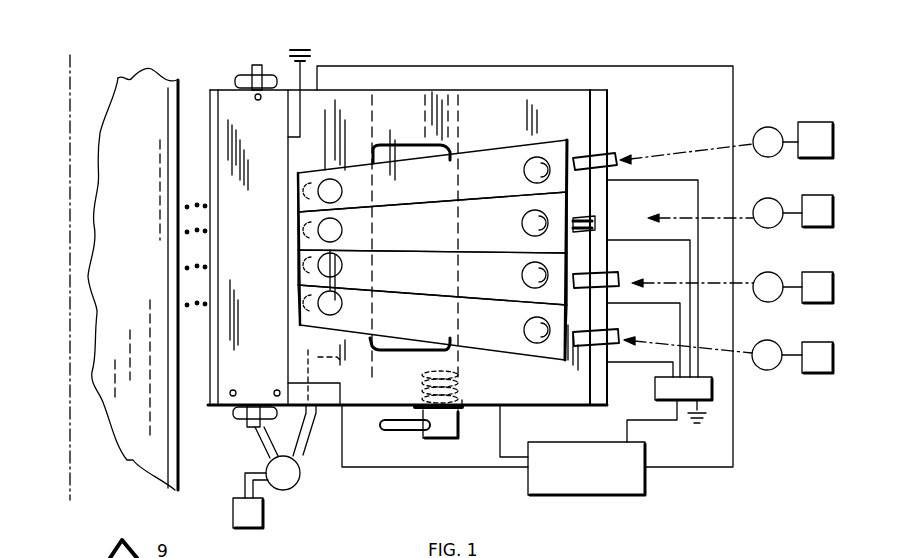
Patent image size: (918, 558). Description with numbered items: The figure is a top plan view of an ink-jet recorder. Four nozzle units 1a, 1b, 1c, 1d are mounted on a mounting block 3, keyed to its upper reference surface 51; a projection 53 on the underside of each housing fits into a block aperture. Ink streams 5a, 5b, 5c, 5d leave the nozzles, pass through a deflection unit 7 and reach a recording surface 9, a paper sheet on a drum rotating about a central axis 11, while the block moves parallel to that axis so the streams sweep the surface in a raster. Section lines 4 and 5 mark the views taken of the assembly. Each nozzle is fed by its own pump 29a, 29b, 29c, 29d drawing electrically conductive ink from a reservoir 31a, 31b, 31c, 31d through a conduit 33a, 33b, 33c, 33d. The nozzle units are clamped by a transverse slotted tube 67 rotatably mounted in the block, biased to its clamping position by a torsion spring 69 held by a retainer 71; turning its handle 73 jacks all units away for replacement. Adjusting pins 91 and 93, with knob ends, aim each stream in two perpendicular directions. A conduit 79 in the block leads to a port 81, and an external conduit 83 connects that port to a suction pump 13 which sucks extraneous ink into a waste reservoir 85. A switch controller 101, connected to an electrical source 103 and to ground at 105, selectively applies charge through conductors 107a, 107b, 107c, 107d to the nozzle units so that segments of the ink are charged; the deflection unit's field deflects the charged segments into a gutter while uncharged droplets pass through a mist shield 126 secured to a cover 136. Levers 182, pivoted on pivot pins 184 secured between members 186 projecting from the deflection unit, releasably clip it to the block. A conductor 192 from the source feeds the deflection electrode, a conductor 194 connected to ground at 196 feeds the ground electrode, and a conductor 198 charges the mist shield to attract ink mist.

The nozzle unit 1a is at (502, 163).
The nozzle unit 1b is at (479, 183).
The nozzle unit 1c is at (477, 337).
The nozzle unit 1d is at (462, 333).
The mounting block 3 is at (382, 89).
The section line 4 is at (250, 24).
The section line 5 is at (155, 218).
The ink stream 5a is at (198, 204).
The ink stream 5b is at (198, 229).
The ink stream 5c is at (198, 265).
The ink stream 5d is at (198, 302).
The deflection unit 7 is at (221, 82).
The recording surface 9 is at (180, 480).
The central axis 11 is at (72, 482).
The suction pump 13 is at (290, 490).
The pump 29a is at (775, 126).
The pump 29b is at (780, 184).
The pump 29c is at (760, 272).
The pump 29d is at (757, 342).
The reservoir 31a is at (818, 120).
The reservoir 31b is at (823, 200).
The reservoir 31c is at (815, 278).
The reservoir 31d is at (815, 346).
The conduit 33a is at (605, 156).
The conduit 33b is at (592, 220).
The conduit 33c is at (612, 275).
The conduit 33d is at (612, 334).
The upper surface 51 is at (563, 100).
The projection 53 is at (524, 330).
The transverse tube 67 is at (445, 438).
The torsion spring 69 is at (466, 395).
The retainer 71 is at (457, 410).
The handle 73 is at (400, 430).
The conduit 79 is at (326, 376).
The port 81 is at (318, 413).
The external conduit 83 is at (302, 460).
The waste reservoir 85 is at (233, 515).
The pin 91 is at (342, 195).
The pin 93 is at (528, 180).
The switch controller 101 is at (668, 400).
The electrical source 103 is at (592, 495).
The ground 105 is at (704, 427).
The conductor 107a is at (685, 358).
The conductor 107b is at (690, 368).
The conductor 107c is at (695, 374).
The conductor 107d is at (698, 378).
The mist shield 126 is at (213, 137).
The cover 136 is at (230, 108).
The lever 182 is at (253, 90).
The pivot pin 184 is at (280, 73).
The member 186 is at (247, 245).
The electrical conductor 192 is at (637, 65).
The electrical conductor 194 is at (303, 73).
The ground 196 is at (302, 45).
The electrical conductor 198 is at (462, 467).